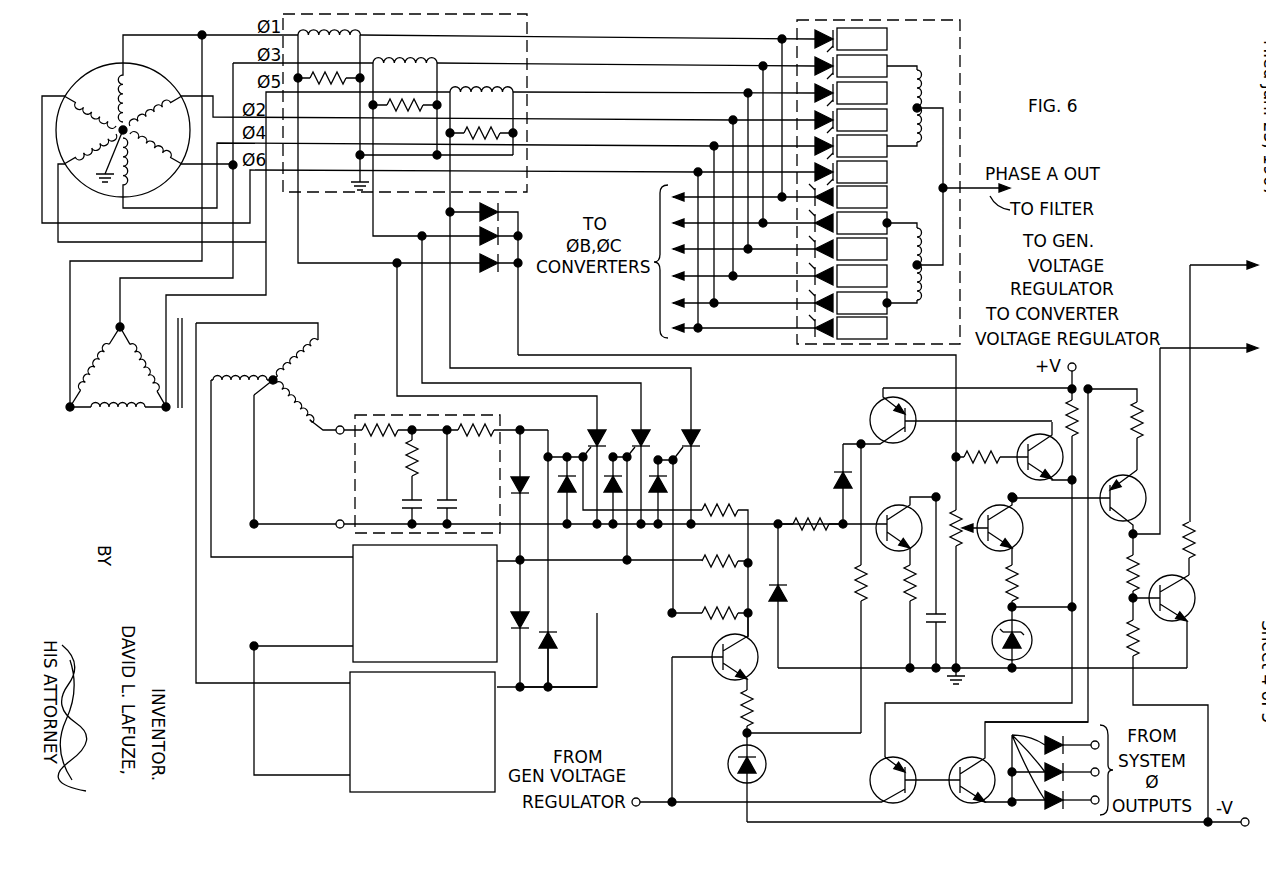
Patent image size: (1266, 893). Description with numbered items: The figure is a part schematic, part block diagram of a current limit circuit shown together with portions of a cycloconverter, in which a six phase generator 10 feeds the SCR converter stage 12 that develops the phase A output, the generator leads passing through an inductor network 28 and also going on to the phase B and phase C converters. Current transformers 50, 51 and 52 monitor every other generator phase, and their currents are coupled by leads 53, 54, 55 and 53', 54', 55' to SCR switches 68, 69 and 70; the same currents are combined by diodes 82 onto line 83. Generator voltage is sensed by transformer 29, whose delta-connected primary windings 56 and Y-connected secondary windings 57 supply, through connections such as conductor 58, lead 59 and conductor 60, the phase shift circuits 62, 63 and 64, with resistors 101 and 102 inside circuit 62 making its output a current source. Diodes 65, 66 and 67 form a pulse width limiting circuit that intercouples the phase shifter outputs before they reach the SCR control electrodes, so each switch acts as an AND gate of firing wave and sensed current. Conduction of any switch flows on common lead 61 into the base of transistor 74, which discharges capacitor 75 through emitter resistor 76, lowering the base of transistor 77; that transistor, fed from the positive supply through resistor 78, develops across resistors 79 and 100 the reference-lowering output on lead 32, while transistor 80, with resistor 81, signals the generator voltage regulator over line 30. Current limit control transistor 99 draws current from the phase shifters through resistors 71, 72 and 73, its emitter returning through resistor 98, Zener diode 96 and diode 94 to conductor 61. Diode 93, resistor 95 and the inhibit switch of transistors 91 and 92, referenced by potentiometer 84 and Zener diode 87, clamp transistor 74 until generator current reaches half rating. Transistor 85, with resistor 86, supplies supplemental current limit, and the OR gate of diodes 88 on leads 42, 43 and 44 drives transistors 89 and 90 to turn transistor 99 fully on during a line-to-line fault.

The generator 10 is at (98, 66).
The converter stage 12 is at (952, 72).
The inductor network 28 is at (421, 101).
The transformer 29 is at (202, 322).
The line 30 is at (1124, 290).
The lead 32 is at (1160, 383).
The lead 42 is at (1072, 740).
The lead 43 is at (1072, 766).
The lead 44 is at (1072, 794).
The current transformer 50 is at (350, 32).
The current transformer 51 is at (425, 62).
The current transformer 52 is at (482, 90).
The lead 53 is at (389, 172).
The lead 54 is at (411, 175).
The lead 55 is at (445, 178).
The lead 53' is at (482, 346).
The lead 54' is at (531, 333).
The lead 55' is at (570, 321).
The primary windings 56 is at (135, 393).
The secondary windings 57 is at (232, 346).
The conductor 58 is at (322, 429).
The lead 59 is at (328, 560).
The conductor 60 is at (196, 655).
The common output lead 61 is at (254, 440).
The phase shift circuit 62 is at (434, 474).
The phase shifter 63 is at (353, 620).
The phase shift circuit 64 is at (350, 723).
The diode 65 is at (526, 492).
The diode 66 is at (536, 622).
The diode 67 is at (552, 646).
The switch 68 is at (592, 434).
The switch 69 is at (638, 434).
The switch 70 is at (686, 434).
The resistor 71 is at (708, 508).
The resistor 72 is at (707, 563).
The resistor 73 is at (710, 613).
The transistor 74 is at (904, 506).
The capacitor 75 is at (946, 616).
The emitter resistor 76 is at (902, 595).
The transistor 77 is at (1124, 474).
The resistor 78 is at (1130, 414).
The resistor 79 is at (1132, 558).
The transistor 80 is at (1172, 628).
The resistor 81 is at (1192, 533).
The diodes 82 is at (508, 259).
The line 83 is at (571, 356).
The potentiometer 84 is at (968, 544).
The transistor 85 is at (1023, 540).
The resistor 86 is at (1019, 576).
The Zener diode 87 is at (1026, 638).
The diodes 88 is at (1043, 767).
The transistor 89 is at (952, 766).
The transistor 90 is at (907, 764).
The transistor 91 is at (1022, 488).
The transistor 92 is at (874, 424).
The diode 93 is at (838, 476).
The diode 94 is at (787, 586).
The resistor 95 is at (854, 568).
The Zener diode 96 is at (766, 760).
The resistor 98 is at (753, 712).
The current limit control transistor 99 is at (712, 654).
The resistor 100 is at (1128, 638).
The resistor 101 is at (380, 443).
The resistor 102 is at (476, 444).